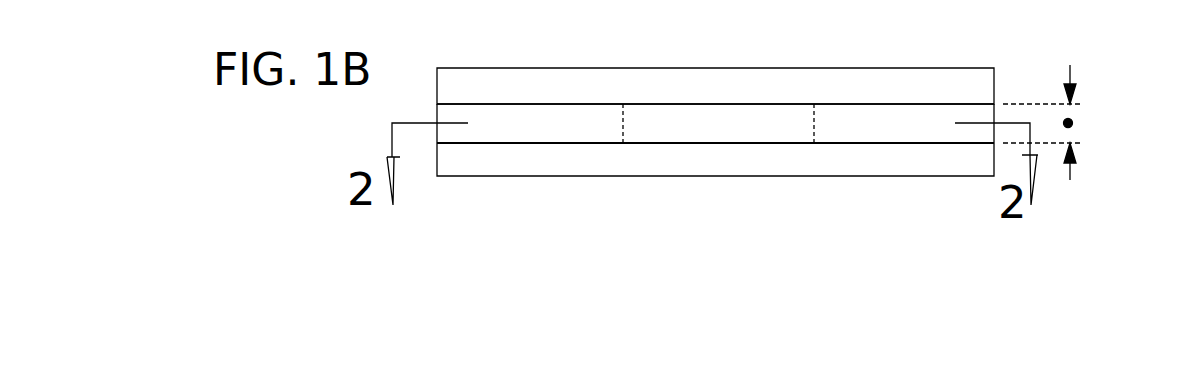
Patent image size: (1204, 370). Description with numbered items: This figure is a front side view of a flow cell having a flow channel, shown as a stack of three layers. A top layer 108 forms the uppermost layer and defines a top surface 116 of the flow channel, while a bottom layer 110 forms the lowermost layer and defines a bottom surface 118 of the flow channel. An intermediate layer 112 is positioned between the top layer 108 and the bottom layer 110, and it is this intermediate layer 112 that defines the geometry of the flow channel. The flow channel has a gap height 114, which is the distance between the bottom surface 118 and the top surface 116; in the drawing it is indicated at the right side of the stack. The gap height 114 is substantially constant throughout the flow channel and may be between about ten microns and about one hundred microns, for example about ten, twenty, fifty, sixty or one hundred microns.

The top layer 108 is at (880, 93).
The bottom layer 110 is at (882, 162).
The intermediate layer 112 is at (912, 123).
The gap height 114 is at (1073, 122).
The top surface 116 is at (718, 103).
The bottom surface 118 is at (716, 143).